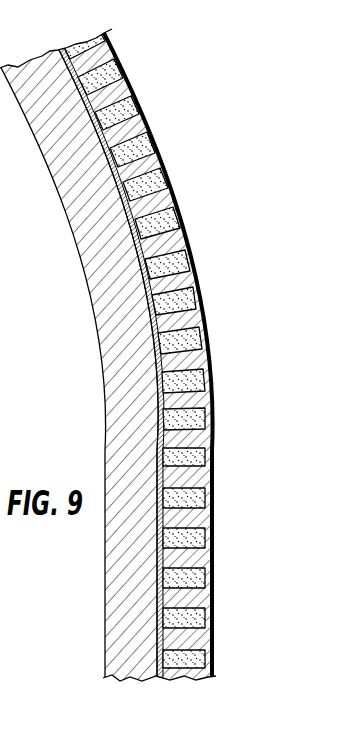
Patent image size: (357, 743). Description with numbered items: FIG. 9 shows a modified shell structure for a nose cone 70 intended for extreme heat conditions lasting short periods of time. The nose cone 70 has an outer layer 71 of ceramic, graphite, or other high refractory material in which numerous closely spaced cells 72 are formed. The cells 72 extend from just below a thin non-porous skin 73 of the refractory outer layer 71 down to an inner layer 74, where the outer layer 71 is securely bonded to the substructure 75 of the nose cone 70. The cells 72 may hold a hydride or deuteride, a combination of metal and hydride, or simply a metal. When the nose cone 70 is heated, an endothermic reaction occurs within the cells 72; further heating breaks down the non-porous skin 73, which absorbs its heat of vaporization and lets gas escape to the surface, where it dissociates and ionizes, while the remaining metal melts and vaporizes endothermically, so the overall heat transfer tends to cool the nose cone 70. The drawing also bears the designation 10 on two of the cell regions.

The electrode segments 10 is at (193, 538).
The nose cone 70 is at (131, 62).
The outer layer 71 is at (137, 127).
The cells 72 is at (145, 148).
The non-porous skin 73 is at (198, 204).
The inner layer 74 is at (143, 244).
The substructure 75 is at (90, 267).